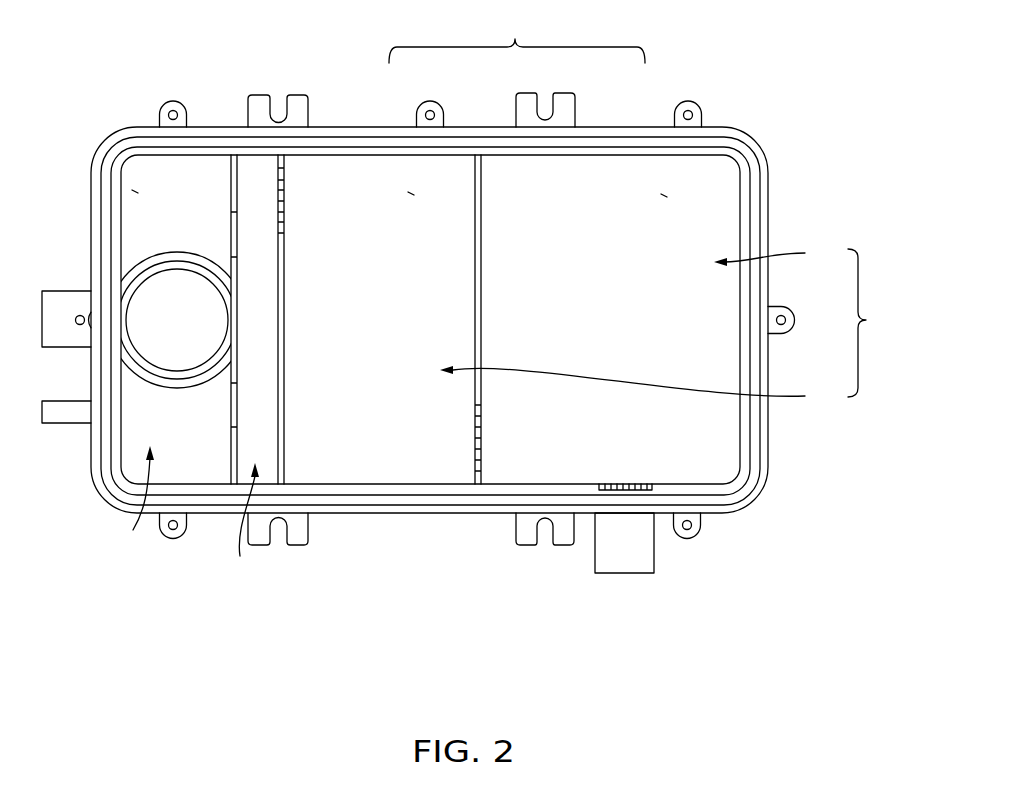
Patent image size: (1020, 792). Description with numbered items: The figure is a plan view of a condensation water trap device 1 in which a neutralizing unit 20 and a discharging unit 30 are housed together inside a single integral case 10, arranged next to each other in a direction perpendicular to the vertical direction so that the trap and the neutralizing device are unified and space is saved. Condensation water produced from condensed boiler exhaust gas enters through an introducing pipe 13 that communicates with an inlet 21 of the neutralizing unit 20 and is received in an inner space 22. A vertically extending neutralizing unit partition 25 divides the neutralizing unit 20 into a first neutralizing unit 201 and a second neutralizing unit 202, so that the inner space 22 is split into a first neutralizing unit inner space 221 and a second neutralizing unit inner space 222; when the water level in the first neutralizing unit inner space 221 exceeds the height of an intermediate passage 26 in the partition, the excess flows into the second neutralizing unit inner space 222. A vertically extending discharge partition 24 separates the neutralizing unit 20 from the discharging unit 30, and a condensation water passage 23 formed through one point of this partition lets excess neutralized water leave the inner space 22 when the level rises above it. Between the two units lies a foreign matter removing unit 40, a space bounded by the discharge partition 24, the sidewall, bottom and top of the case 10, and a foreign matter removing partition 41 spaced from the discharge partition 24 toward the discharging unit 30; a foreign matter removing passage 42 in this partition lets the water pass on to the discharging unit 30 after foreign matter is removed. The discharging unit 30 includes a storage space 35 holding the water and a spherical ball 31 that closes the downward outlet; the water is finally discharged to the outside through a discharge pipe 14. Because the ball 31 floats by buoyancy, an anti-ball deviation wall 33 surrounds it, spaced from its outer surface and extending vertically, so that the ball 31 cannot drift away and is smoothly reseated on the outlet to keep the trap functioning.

The condensation water trap device 1 is at (593, 631).
The case 10 is at (759, 518).
The introducing pipe 13 is at (654, 560).
The discharge pipe 14 is at (48, 291).
The neutralizing unit 20 is at (871, 323).
The first neutralizing unit 201 is at (777, 254).
The second neutralizing unit 202 is at (640, 387).
The inlet 21 is at (645, 482).
The inner space 22 is at (517, 37).
The first neutralizing unit inner space 221 is at (667, 197).
The second neutralizing unit inner space 222 is at (414, 195).
The condensation water passage 23 is at (285, 188).
The discharge partition 24 is at (285, 478).
The neutralizing unit partition 25 is at (481, 187).
The intermediate passage 26 is at (483, 450).
The discharging unit 30 is at (136, 497).
The ball 31 is at (147, 346).
The anti-ball deviation wall 33 is at (140, 373).
The storage space 35 is at (138, 193).
The foreign matter removing unit 40 is at (242, 520).
The foreign matter removing partition 41 is at (232, 452).
The foreign matter removing passage 42 is at (230, 236).